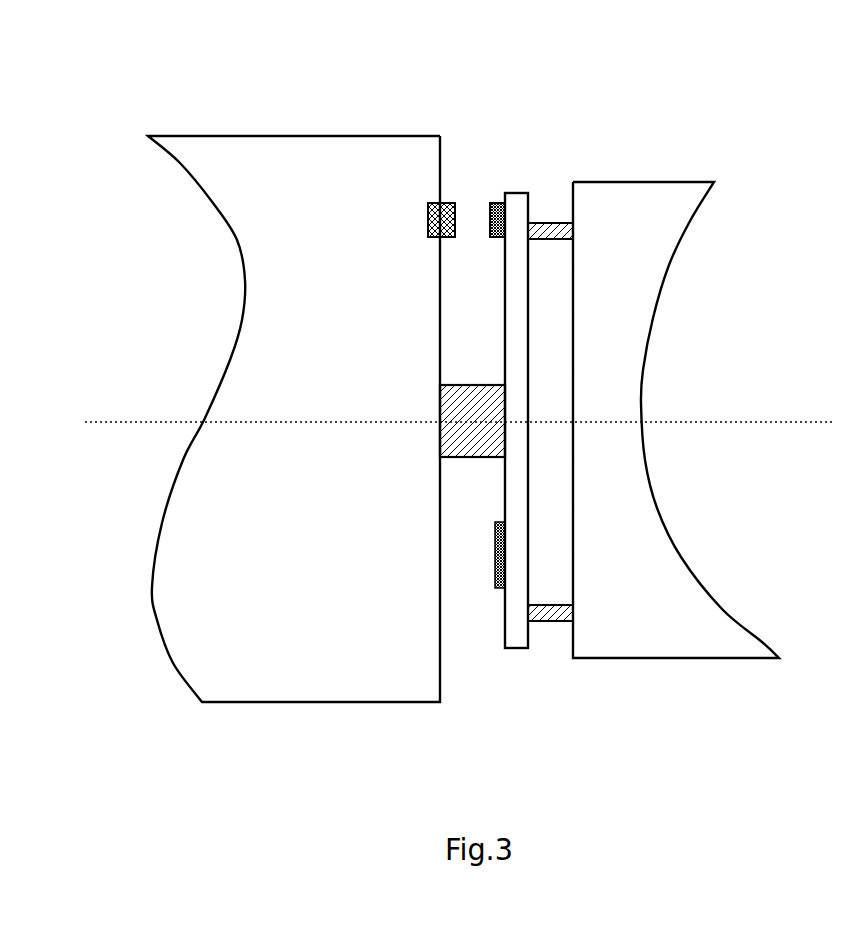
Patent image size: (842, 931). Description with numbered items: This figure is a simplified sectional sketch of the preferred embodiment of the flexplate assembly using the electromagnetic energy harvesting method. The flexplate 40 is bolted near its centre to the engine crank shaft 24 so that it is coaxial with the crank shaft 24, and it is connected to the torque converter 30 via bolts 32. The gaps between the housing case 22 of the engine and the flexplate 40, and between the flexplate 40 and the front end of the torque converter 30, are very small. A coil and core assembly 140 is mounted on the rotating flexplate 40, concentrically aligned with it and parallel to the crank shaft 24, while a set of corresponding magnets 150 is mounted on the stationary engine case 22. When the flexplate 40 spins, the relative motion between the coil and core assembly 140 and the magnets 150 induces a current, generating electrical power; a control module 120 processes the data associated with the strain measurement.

The housing case 22 is at (253, 152).
The engine crank shaft 24 is at (440, 449).
The torque converter 30 is at (633, 182).
The bolts 32 is at (553, 630).
The flexplate 40 is at (530, 195).
The control module 120 is at (491, 587).
The coil and core assembly 140 is at (498, 195).
The magnets 150 is at (447, 200).